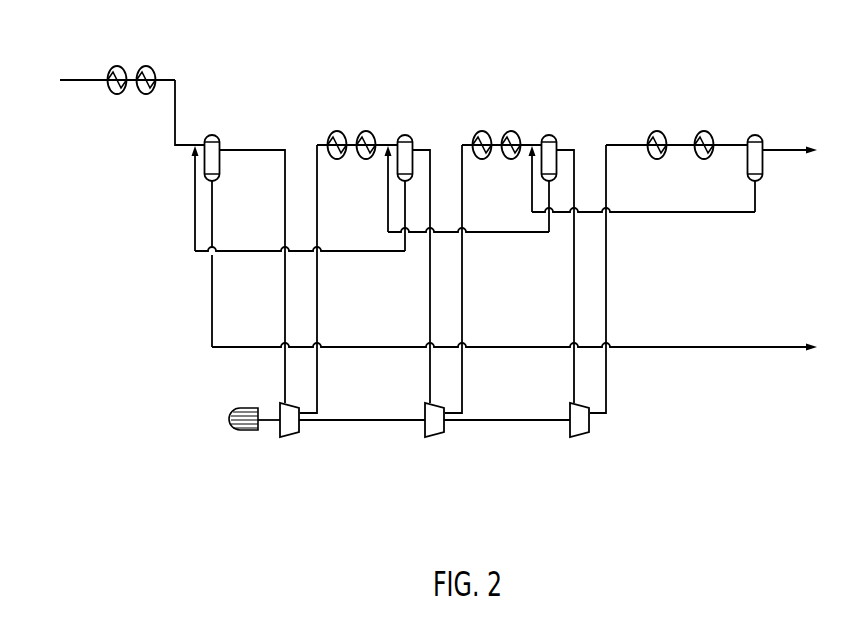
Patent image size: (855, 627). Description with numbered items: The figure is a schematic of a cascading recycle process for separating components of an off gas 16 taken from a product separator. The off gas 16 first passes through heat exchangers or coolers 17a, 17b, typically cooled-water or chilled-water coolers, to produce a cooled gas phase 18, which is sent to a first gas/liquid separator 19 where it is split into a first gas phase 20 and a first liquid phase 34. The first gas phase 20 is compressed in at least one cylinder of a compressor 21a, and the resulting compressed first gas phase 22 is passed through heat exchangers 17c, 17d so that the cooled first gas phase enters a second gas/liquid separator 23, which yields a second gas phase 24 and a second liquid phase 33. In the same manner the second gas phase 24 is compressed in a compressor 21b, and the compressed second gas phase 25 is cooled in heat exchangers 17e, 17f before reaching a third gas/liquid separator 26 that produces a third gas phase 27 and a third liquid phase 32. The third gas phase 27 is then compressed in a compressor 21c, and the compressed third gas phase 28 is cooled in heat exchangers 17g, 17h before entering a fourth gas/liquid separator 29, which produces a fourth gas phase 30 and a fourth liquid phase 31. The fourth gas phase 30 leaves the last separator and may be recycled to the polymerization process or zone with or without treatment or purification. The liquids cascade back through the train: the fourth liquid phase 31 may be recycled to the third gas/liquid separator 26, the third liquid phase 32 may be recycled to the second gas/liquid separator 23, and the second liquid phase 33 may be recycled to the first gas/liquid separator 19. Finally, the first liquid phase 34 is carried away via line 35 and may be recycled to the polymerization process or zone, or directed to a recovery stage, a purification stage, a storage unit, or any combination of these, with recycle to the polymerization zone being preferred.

The off gas 16 is at (85, 80).
The heat exchanger 17a is at (117, 95).
The heat exchanger 17b is at (146, 95).
The heat exchanger 17c is at (337, 131).
The heat exchanger 17d is at (366, 131).
The heat exchanger 17e is at (482, 131).
The heat exchanger 17f is at (511, 131).
The heat exchanger 17g is at (657, 131).
The heat exchanger 17h is at (704, 131).
The cooled gas phase 18 is at (176, 97).
The first gas/liquid separator 19 is at (212, 133).
The first gas phase 20 is at (258, 148).
The compressor 21a is at (290, 437).
The compressor 21b is at (435, 437).
The compressor 21c is at (580, 437).
The compressed first gas phase 22 is at (317, 302).
The second gas/liquid separator 23 is at (407, 133).
The second gas phase 24 is at (430, 298).
The compressed second gas phase 25 is at (462, 302).
The third gas/liquid separator 26 is at (551, 133).
The third gas phase 27 is at (574, 298).
The compressed third gas phase 28 is at (606, 302).
The fourth gas/liquid separator 29 is at (757, 133).
The fourth gas phase 30 is at (787, 146).
The fourth liquid phase 31 is at (700, 213).
The third liquid phase 32 is at (492, 233).
The second liquid phase 33 is at (335, 250).
The first liquid phase 34 is at (212, 302).
The line 35 is at (725, 345).